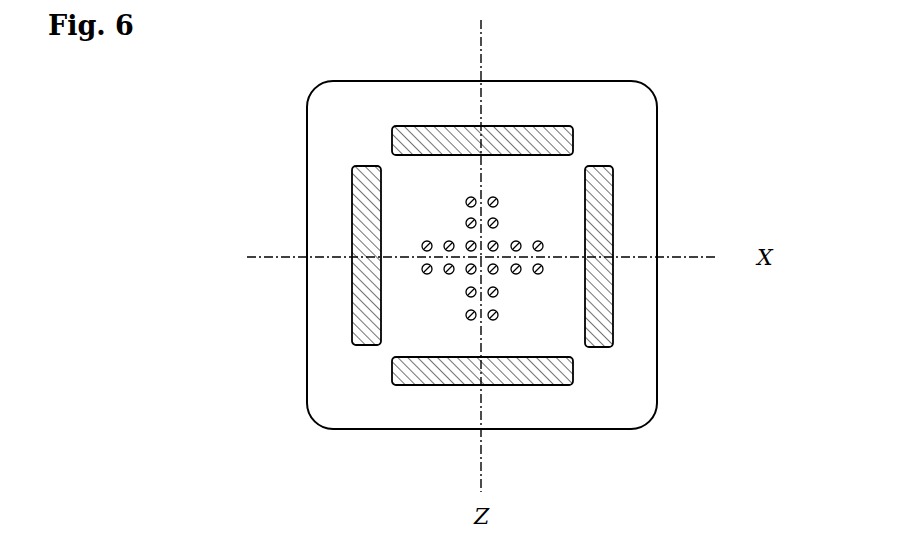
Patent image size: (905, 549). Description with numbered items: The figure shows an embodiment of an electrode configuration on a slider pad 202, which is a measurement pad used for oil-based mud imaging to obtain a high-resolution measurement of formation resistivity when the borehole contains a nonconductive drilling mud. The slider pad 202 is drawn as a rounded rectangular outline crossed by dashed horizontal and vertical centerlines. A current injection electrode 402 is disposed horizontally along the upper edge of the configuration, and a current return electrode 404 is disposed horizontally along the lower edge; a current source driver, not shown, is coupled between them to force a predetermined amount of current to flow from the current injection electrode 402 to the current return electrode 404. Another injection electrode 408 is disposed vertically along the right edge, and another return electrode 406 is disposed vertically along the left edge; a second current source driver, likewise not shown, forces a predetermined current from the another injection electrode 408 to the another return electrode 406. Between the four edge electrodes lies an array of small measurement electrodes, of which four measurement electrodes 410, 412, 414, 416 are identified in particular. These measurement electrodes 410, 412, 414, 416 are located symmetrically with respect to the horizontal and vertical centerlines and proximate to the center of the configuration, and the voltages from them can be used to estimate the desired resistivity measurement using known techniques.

The slider pad 202 is at (360, 432).
The current injection electrode 402 is at (437, 156).
The current return electrode 404 is at (437, 387).
The another return electrode 406 is at (372, 348).
The another injection electrode 408 is at (584, 327).
The measurement electrode 410 is at (467, 242).
The measurement electrode 412 is at (467, 274).
The measurement electrode 414 is at (497, 243).
The measurement electrode 416 is at (497, 274).